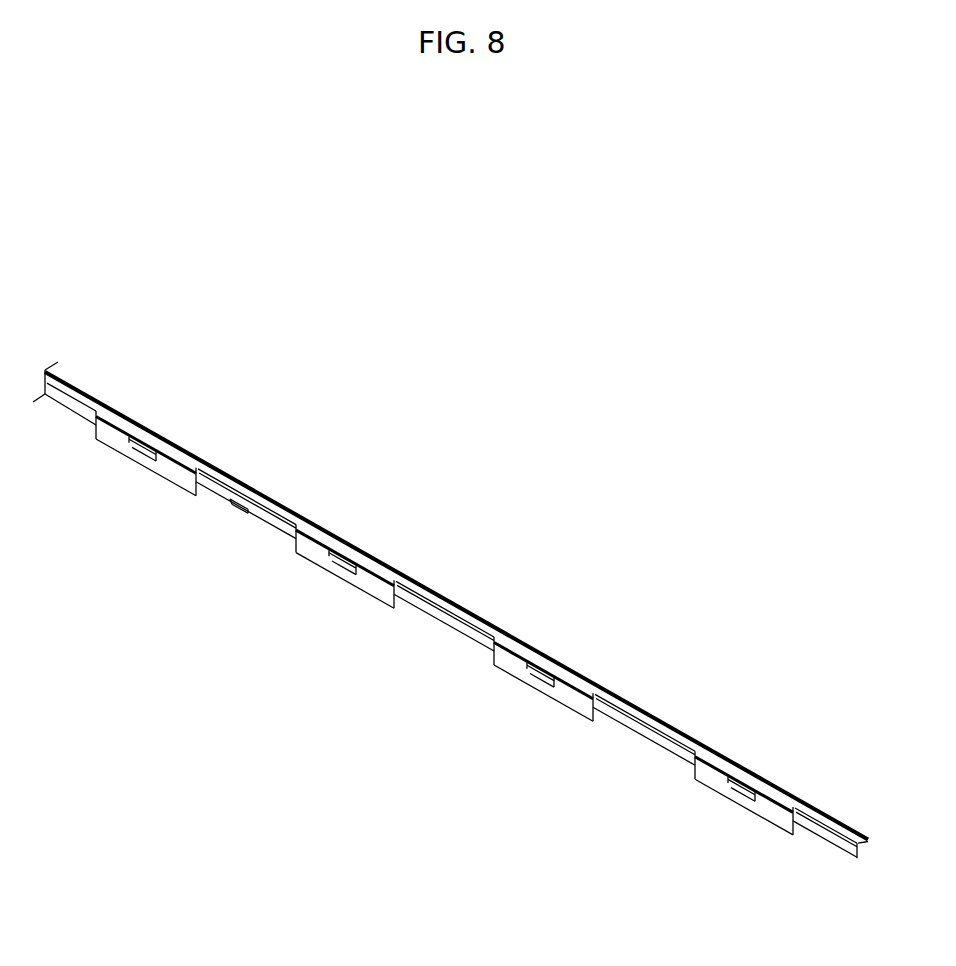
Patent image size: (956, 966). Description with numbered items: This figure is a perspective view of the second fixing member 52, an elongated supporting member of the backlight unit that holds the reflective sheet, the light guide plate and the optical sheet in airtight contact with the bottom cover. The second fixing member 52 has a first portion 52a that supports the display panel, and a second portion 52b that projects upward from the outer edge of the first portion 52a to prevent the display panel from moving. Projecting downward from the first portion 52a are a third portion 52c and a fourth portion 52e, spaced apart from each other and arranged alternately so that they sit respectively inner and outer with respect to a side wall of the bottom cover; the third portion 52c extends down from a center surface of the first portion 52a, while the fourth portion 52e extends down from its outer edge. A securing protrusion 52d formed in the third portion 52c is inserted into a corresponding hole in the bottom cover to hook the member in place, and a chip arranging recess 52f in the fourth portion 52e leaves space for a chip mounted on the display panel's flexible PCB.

The second fixing member 52 is at (450, 642).
The first portion 52a is at (717, 762).
The second portion 52b is at (645, 720).
The third portion 52c is at (847, 855).
The securing protrusion 52d is at (820, 842).
The fourth portion 52e is at (765, 810).
The chip arranging recess 52f is at (728, 793).